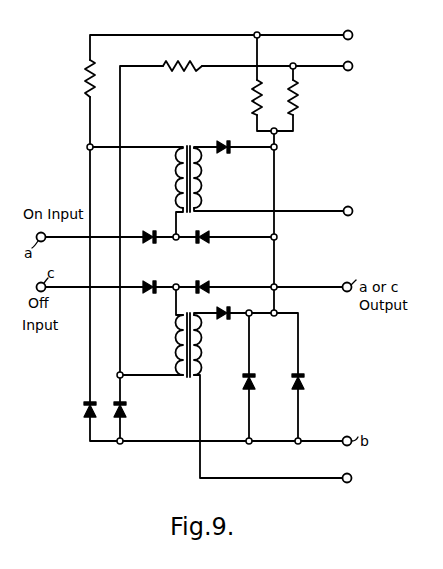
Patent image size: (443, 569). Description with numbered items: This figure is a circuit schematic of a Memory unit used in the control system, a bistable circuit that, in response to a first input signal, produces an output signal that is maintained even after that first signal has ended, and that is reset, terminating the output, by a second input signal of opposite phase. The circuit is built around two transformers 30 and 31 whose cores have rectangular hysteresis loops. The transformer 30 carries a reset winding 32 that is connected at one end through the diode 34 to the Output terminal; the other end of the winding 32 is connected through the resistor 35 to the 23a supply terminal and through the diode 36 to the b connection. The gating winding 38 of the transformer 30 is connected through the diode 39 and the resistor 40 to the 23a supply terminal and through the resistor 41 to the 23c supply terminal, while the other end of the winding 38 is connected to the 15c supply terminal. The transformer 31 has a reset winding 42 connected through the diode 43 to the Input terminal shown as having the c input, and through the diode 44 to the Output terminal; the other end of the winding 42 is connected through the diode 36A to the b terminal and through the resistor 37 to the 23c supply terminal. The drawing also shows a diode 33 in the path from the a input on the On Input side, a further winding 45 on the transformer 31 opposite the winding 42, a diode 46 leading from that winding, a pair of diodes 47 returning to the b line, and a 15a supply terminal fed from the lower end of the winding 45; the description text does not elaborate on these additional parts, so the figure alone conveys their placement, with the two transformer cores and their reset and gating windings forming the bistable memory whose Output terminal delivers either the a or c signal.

The transformer 30 is at (185, 166).
The transformer 31 is at (189, 358).
The reset winding 32 is at (176, 186).
The diode 33 is at (150, 232).
The diode 34 is at (205, 232).
The resistor 35 is at (87, 88).
The diode 36 is at (86, 411).
The diode 36A is at (123, 411).
The resistor 37 is at (200, 73).
The gating winding 38 is at (202, 201).
The diode 39 is at (228, 153).
The resistor 40 is at (254, 106).
The resistor 41 is at (297, 106).
The reset winding 42 is at (177, 348).
The diode 43 is at (150, 282).
The diode 44 is at (199, 284).
The secondary winding 45 is at (201, 352).
The diode 46 is at (225, 309).
The diodes 47 is at (295, 374).
The supply terminal 23a is at (352, 37).
The supply terminal 23c is at (352, 67).
The supply terminal 15c is at (352, 212).
The terminal 15a is at (352, 478).